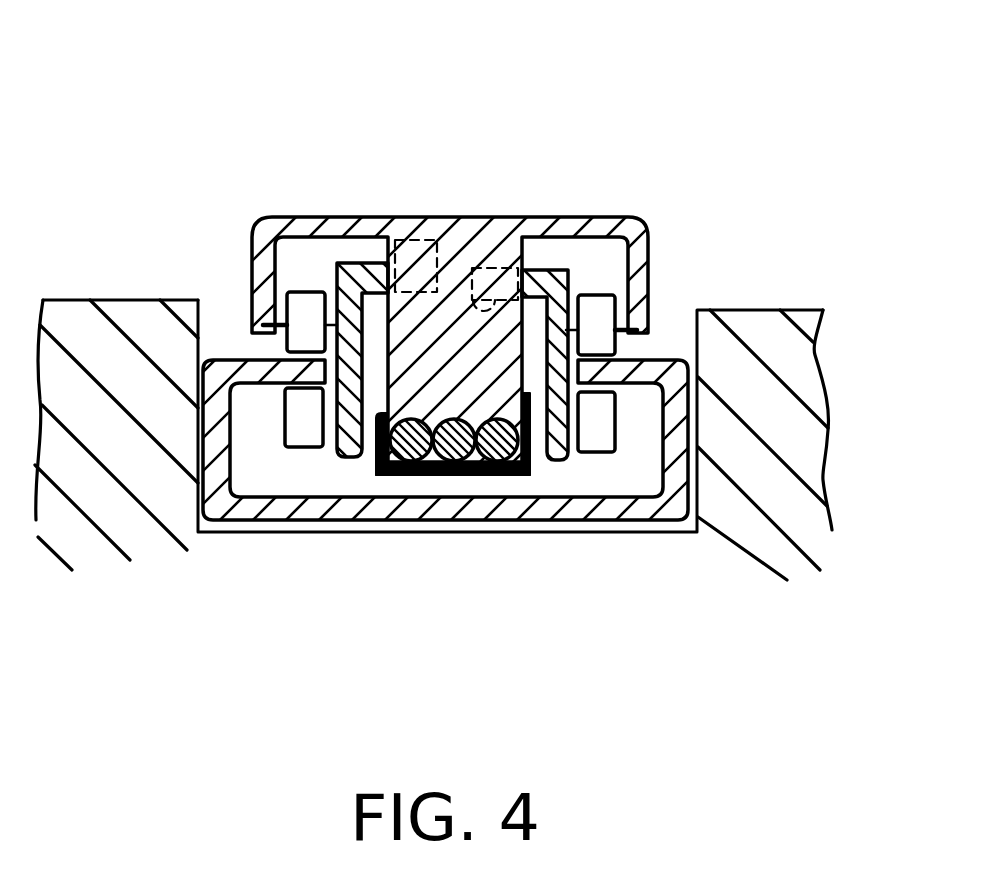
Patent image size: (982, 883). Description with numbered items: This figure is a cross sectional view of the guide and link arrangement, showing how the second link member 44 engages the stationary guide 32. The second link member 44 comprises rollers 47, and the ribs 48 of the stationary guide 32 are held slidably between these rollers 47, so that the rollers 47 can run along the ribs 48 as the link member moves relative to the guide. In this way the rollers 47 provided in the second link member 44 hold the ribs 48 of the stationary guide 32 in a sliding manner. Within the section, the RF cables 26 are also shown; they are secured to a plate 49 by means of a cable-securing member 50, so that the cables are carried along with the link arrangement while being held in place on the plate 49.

The second link member 44 is at (483, 200).
The rollers 47 is at (308, 305).
The ribs 48 is at (268, 357).
The plate 49 is at (392, 421).
The cable-securing member 50 is at (458, 478).
The RF cables 26 is at (497, 440).
The stationary guide 32 is at (712, 494).